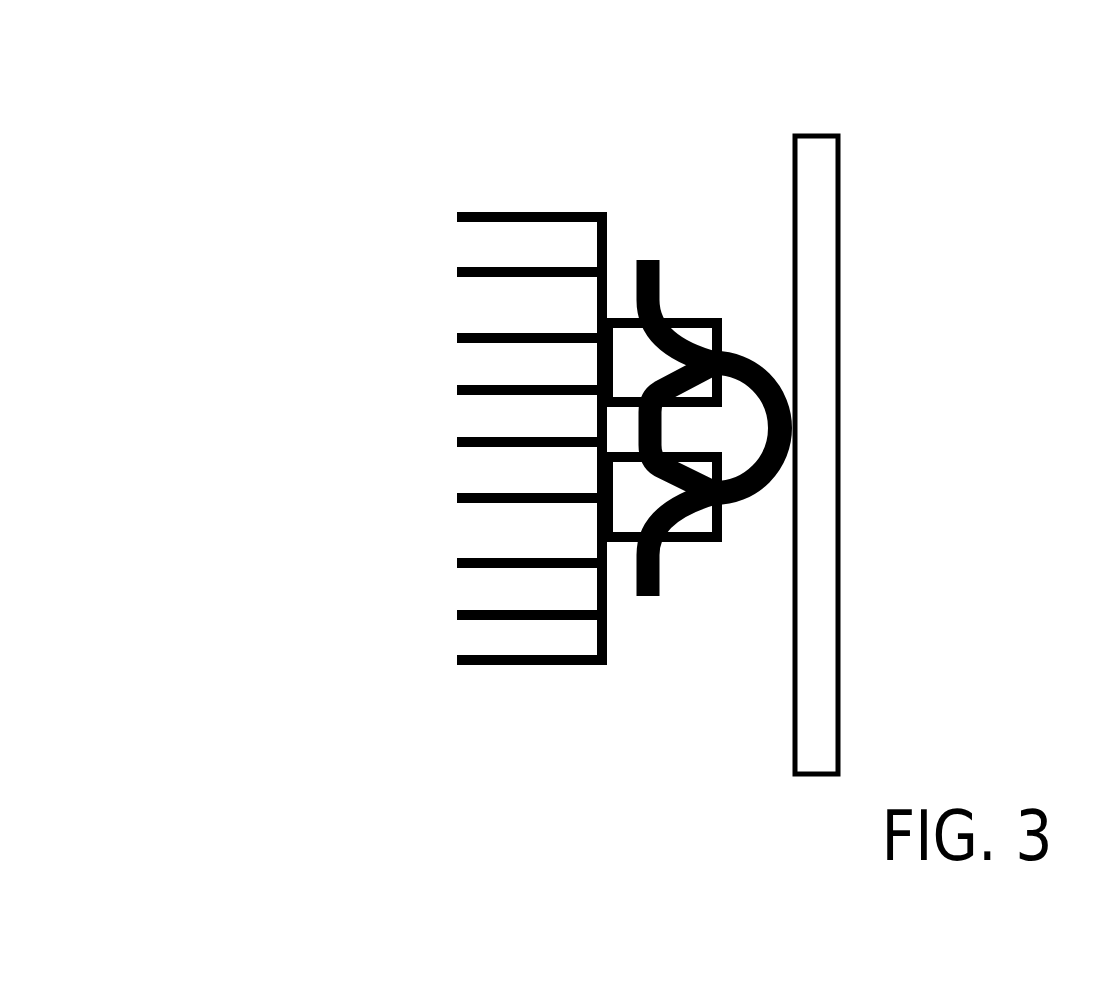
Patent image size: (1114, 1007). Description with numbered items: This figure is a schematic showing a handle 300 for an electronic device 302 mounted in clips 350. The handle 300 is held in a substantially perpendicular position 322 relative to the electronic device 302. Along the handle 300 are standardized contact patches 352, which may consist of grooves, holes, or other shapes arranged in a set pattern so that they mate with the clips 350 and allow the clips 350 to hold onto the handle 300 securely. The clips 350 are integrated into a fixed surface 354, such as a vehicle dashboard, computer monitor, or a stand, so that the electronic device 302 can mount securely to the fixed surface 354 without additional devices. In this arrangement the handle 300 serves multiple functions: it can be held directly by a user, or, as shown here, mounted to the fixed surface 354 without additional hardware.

The handle 300 is at (274, 193).
The electronic device 302 is at (828, 298).
The substantially perpendicular position 322 is at (647, 608).
The clips 350 is at (627, 455).
The standardized contact patches 352 is at (662, 408).
The fixed surface 354 is at (510, 373).